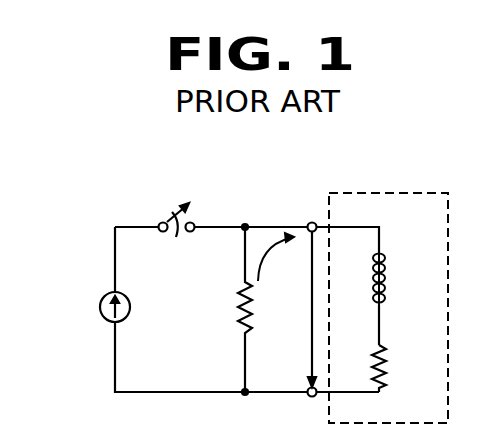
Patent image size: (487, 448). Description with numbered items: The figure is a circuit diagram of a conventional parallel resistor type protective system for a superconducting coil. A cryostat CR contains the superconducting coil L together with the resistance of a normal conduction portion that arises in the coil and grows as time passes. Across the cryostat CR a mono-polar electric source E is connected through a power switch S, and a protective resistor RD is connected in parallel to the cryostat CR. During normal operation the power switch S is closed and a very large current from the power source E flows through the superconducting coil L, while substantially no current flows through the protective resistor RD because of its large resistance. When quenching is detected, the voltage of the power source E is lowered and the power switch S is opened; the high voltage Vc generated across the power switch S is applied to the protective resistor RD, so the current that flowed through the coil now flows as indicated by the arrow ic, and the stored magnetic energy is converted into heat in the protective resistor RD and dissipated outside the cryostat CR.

The mono-polar electric source E is at (100, 305).
The power switch S is at (177, 207).
The protective resistor RD is at (227, 309).
The electric current ic is at (276, 257).
The high voltage Vc is at (298, 309).
The cryostat CR is at (382, 192).
The superconducting coil L is at (390, 298).